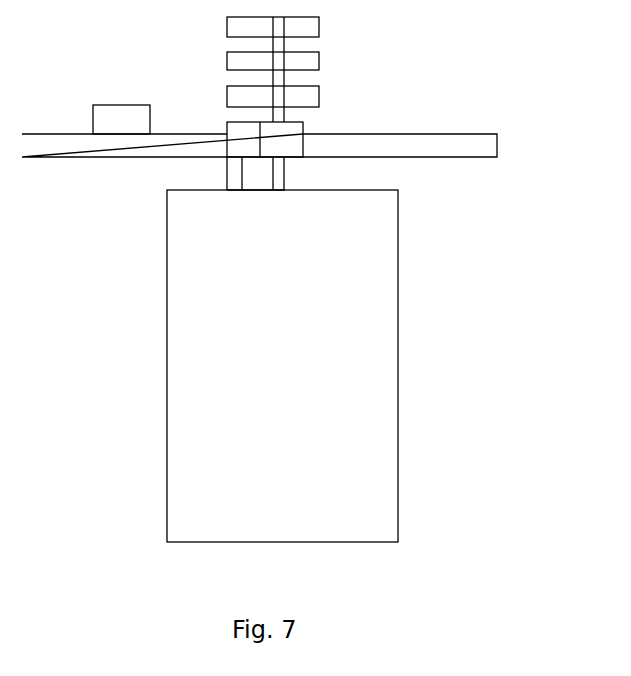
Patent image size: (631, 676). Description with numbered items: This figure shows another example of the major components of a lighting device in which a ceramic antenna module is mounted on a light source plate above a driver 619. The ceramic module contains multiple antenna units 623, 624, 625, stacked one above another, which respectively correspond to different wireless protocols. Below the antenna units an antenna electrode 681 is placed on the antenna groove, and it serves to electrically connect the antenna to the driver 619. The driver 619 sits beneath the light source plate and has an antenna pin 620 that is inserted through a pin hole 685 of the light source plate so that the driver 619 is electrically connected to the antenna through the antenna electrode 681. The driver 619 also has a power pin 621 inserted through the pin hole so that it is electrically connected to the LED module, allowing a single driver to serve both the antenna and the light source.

The driver 619 is at (390, 348).
The antenna pin 620 is at (282, 178).
The power pin 621 is at (227, 178).
The antenna unit 623 is at (313, 36).
The antenna unit 624 is at (315, 65).
The antenna unit 625 is at (310, 100).
The antenna electrode 681 is at (293, 133).
The pin hole 685 is at (307, 150).